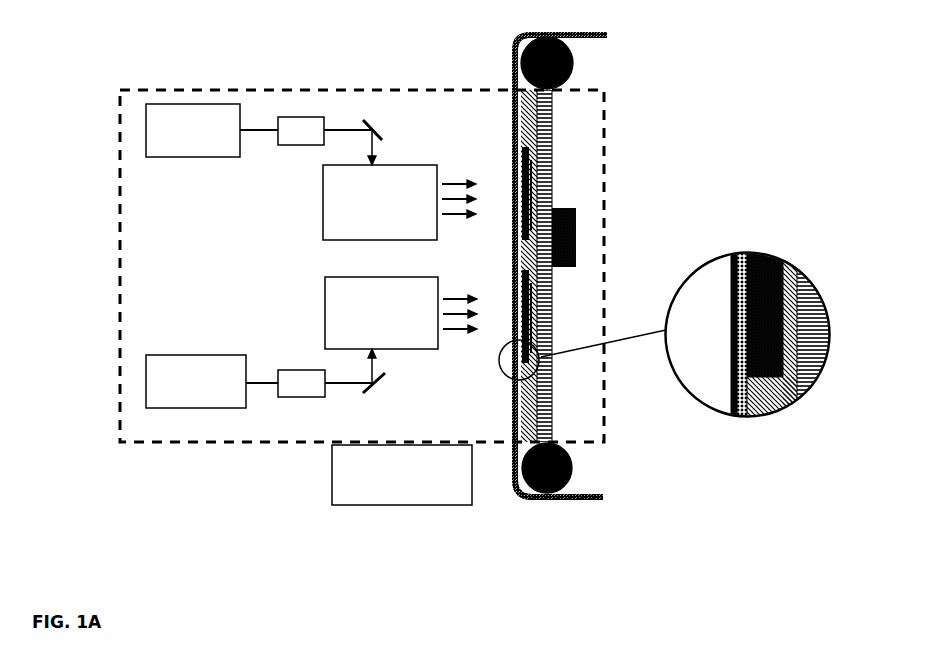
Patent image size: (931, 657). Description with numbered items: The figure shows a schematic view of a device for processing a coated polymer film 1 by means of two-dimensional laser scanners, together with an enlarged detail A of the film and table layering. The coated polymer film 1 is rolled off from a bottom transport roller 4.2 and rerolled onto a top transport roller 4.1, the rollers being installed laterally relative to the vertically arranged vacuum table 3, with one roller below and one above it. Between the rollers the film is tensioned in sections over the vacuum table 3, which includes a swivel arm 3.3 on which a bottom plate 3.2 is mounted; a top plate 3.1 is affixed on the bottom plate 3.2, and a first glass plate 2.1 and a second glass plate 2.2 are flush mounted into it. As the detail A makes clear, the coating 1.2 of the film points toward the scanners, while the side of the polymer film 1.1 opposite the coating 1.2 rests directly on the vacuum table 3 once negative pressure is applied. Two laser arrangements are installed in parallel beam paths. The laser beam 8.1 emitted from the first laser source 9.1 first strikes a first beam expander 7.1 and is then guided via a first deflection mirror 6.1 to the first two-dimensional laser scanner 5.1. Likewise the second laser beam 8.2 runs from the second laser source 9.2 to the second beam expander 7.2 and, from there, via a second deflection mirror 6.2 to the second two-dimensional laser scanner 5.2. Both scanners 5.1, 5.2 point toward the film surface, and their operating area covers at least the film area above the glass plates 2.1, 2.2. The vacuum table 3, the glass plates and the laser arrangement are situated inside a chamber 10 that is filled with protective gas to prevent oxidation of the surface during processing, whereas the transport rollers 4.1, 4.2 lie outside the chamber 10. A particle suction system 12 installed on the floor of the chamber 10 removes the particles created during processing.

The coated polymer film 1 is at (517, 73).
The polymer film 1.1 is at (743, 412).
The coating 1.2 is at (733, 410).
The first glass plate 2.1 is at (527, 158).
The second glass plate 2.2 is at (528, 328).
The vacuum table 3 is at (704, 270).
The top plate 3.1 is at (552, 174).
The bottom plate 3.2 is at (545, 198).
The swivel arm 3.3 is at (607, 237).
The top transport roller 4.1 is at (573, 63).
The bottom transport roller 4.2 is at (573, 468).
The first 2D laser scanner 5.1 is at (347, 208).
The second 2D laser scanner 5.2 is at (347, 285).
The first deflection mirror 6.1 is at (367, 122).
The second deflection mirror 6.2 is at (370, 387).
The first beam expander 7.1 is at (310, 125).
The second beam expander 7.2 is at (288, 390).
The laser beam 8.1 is at (262, 127).
The second laser beam 8.2 is at (265, 385).
The first laser source 9.1 is at (197, 118).
The second laser source 9.2 is at (192, 393).
The chamber 10 is at (120, 378).
The particle suction system 12 is at (395, 480).
The enlarged detail A is at (665, 335).